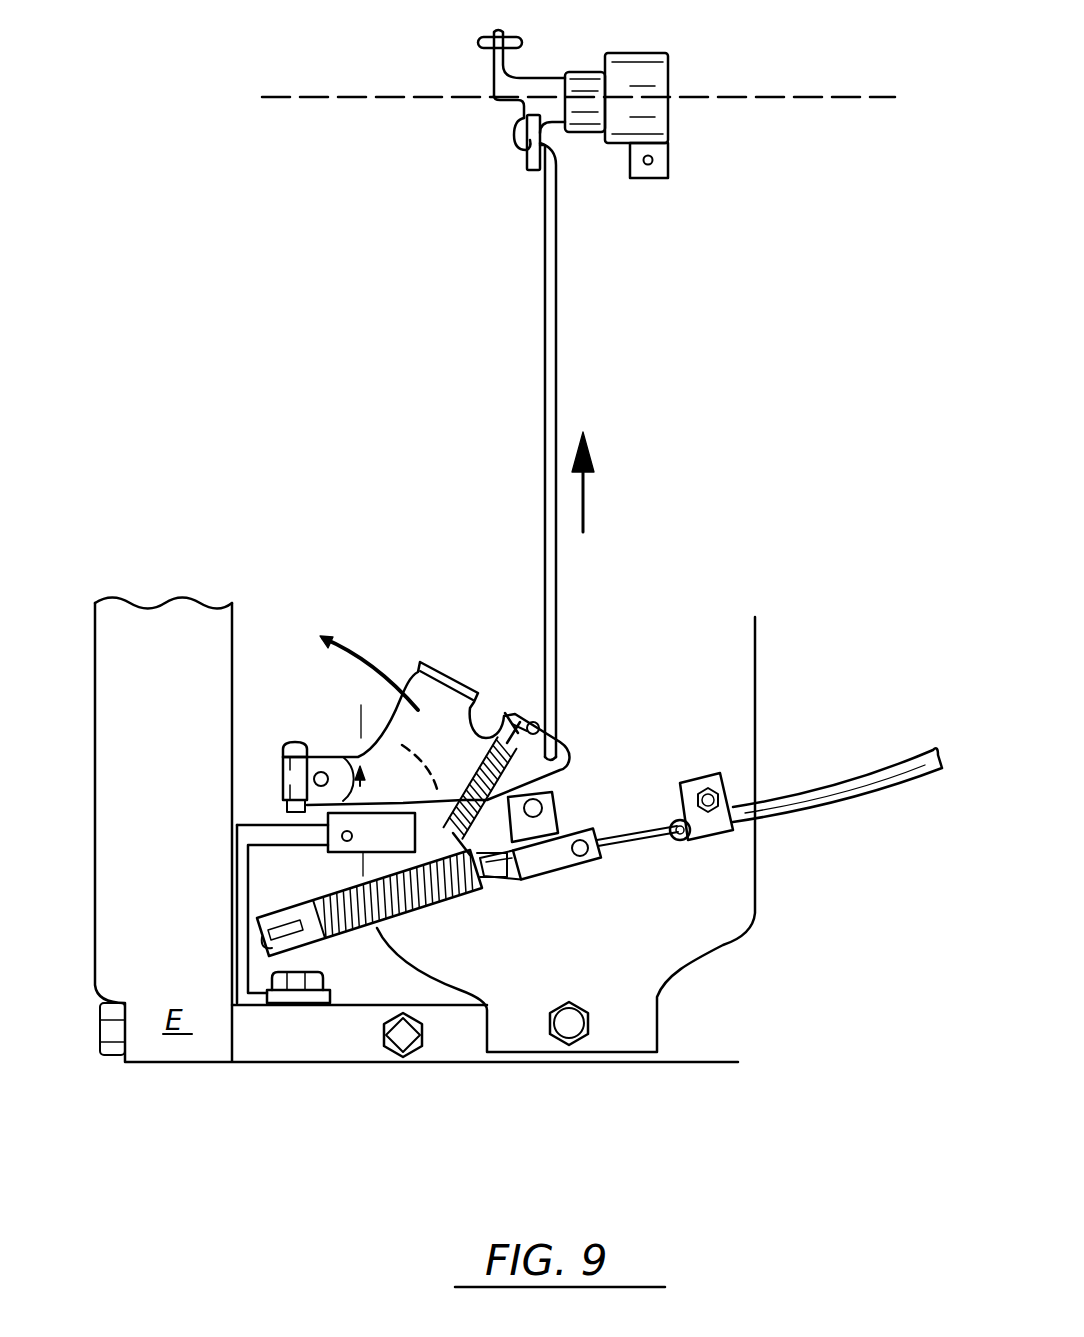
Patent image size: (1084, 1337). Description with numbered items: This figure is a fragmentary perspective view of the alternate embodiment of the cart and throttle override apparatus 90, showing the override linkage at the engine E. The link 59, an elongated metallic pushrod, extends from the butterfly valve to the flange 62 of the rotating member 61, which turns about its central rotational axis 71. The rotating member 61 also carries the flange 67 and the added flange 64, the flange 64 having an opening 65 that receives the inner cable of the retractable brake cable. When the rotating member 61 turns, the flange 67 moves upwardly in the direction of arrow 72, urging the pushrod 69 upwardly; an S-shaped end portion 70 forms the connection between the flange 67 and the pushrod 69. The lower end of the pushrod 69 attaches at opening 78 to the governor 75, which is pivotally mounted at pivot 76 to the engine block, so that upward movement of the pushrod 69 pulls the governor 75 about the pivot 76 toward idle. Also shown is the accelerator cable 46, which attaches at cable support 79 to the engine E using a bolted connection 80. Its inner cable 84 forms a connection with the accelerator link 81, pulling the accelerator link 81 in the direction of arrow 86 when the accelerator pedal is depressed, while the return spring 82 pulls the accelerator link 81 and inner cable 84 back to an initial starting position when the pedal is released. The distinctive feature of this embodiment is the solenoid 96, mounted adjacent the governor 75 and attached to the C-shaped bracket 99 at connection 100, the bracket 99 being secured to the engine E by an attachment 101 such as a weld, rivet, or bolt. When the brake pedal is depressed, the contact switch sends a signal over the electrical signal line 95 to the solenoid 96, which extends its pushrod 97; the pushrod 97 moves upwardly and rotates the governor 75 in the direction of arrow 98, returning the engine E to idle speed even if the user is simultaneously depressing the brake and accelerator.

The accelerator cable 46 is at (895, 757).
The link 59 is at (520, 38).
The rotating member 61 is at (660, 76).
The flange 62 is at (494, 72).
The flange 64 is at (668, 150).
The opening 65 is at (648, 166).
The flange 67 is at (525, 148).
The pushrod 69 is at (545, 272).
The S-shaped end portion 70 is at (515, 128).
The central rotational axis 71 is at (272, 95).
The arrow 72 is at (583, 487).
The governor 75 is at (397, 712).
The pivot 76 is at (326, 757).
The opening 78 is at (556, 752).
The cable support 79 is at (703, 850).
The bolted connection 80 is at (718, 778).
The accelerator link 81 is at (552, 853).
The return spring 82 is at (428, 905).
The inner cable 84 is at (640, 847).
The arrow 86 is at (658, 809).
The cart and throttle override apparatus 90 is at (380, 454).
The electrical signal line 95 is at (348, 642).
The solenoid 96 is at (404, 849).
The pushrod 97 is at (327, 805).
The arrow 98 is at (357, 784).
The bracket 99 is at (237, 930).
The connection 100 is at (322, 848).
The attachment 101 is at (308, 992).